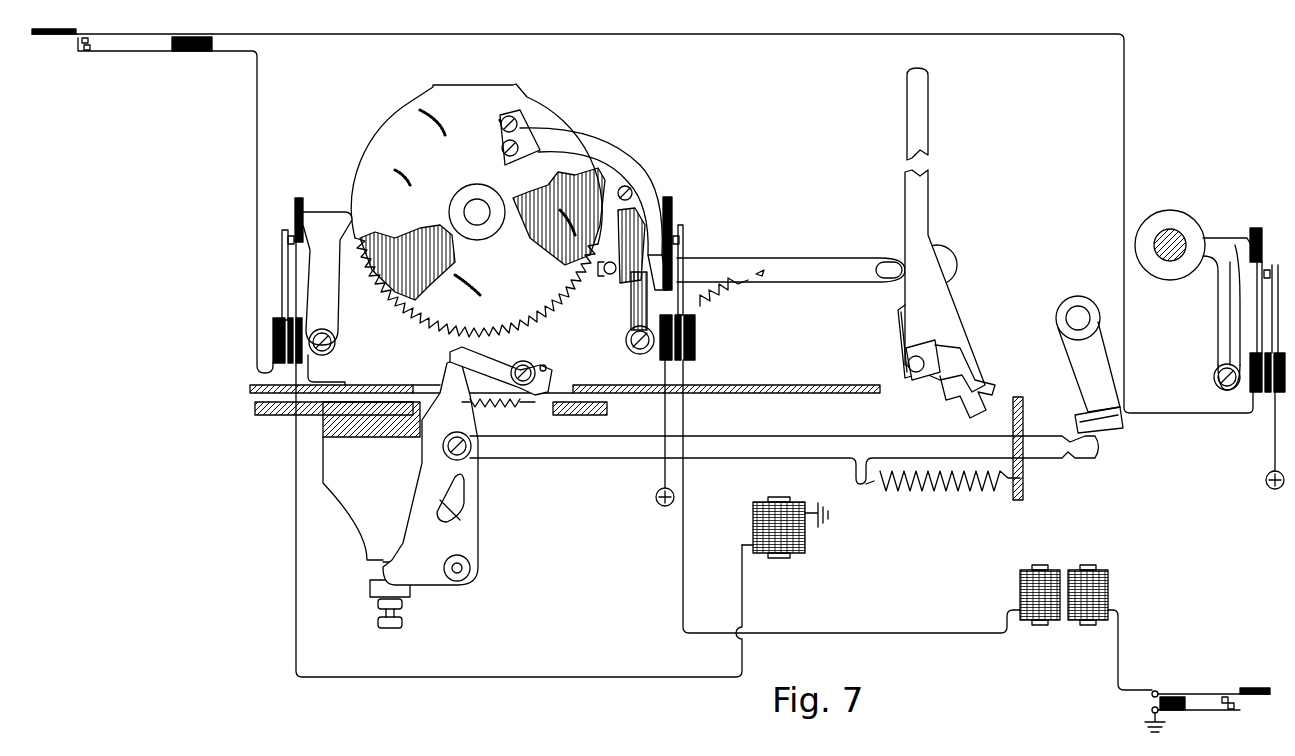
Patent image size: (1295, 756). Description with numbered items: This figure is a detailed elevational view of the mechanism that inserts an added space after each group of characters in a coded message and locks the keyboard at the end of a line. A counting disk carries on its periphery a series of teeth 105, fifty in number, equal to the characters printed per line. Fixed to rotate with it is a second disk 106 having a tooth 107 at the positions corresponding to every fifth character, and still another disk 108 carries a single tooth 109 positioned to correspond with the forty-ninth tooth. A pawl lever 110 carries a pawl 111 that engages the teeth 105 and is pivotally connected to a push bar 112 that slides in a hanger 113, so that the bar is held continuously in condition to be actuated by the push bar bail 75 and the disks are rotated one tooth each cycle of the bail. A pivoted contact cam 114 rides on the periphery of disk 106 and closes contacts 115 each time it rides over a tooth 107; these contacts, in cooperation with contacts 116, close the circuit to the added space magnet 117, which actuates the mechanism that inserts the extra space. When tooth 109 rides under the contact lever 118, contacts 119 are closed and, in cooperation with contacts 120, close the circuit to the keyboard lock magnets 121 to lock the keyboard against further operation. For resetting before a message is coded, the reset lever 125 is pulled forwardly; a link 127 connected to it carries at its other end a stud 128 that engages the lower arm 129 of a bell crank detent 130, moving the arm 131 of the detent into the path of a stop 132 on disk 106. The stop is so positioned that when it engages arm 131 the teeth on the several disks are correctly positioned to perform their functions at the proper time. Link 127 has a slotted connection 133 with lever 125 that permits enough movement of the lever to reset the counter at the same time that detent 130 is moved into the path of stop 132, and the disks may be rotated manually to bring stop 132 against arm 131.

The push bar bail 75 is at (1110, 432).
The teeth 105 is at (578, 302).
The second disk 106 is at (460, 193).
The tooth 107 is at (430, 88).
The disk 108 is at (388, 262).
The single tooth 109 is at (665, 200).
The pawl lever 110 is at (470, 546).
The pawl 111 is at (448, 360).
The push bar 112 is at (722, 440).
The hanger 113 is at (1015, 395).
The pivoted contact cam 114 is at (322, 210).
The contacts 115 is at (284, 228).
The contacts 116 is at (1267, 262).
The added space magnet 117 is at (805, 535).
The contact lever 118 is at (667, 225).
The contacts 119 is at (681, 230).
The contacts 120 is at (1245, 702).
The keyboard lock magnets 121 is at (1103, 588).
The reset lever 125 is at (922, 190).
The link 127 is at (791, 244).
The stud 128 is at (606, 275).
The lower arm 129 is at (668, 253).
The bell crank detent 130 is at (622, 182).
The arm 131 is at (570, 142).
The stop 132 is at (520, 126).
The slotted connection 133 is at (885, 264).